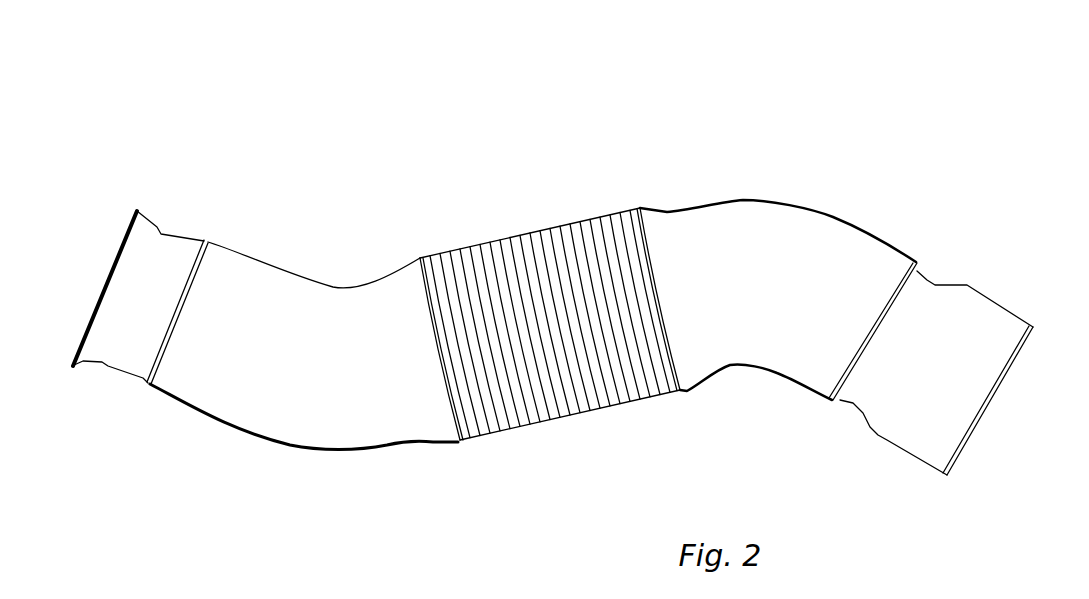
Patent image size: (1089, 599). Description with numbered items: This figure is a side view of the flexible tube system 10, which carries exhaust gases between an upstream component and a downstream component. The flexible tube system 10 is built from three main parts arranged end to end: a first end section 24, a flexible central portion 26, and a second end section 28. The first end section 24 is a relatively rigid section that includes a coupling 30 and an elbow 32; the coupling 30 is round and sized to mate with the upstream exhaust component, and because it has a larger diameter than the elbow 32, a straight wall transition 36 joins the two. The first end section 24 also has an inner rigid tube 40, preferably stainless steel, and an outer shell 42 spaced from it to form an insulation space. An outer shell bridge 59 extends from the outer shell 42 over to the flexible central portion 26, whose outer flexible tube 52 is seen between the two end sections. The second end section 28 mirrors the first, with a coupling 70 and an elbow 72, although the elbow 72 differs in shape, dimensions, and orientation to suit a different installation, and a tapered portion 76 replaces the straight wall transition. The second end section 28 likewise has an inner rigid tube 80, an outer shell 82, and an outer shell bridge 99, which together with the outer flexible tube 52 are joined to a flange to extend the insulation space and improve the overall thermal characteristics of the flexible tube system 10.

The flexible tube system 10 is at (630, 128).
The first end section 24 is at (286, 243).
The flexible central portion 26 is at (515, 222).
The second end section 28 is at (797, 186).
The coupling 30 is at (137, 226).
The elbow 32 is at (295, 415).
The straight wall transition 36 is at (108, 366).
The inner rigid tube 40 is at (178, 253).
The outer shell 42 is at (243, 435).
The outer flexible tube 52 is at (572, 402).
The outer shell bridge 59 is at (433, 445).
The coupling 70 is at (997, 325).
The elbow 72 is at (743, 223).
The tapered portion 76 is at (868, 425).
The inner rigid tube 80 is at (917, 285).
The outer shell 82 is at (858, 225).
The outer shell bridge 99 is at (695, 388).